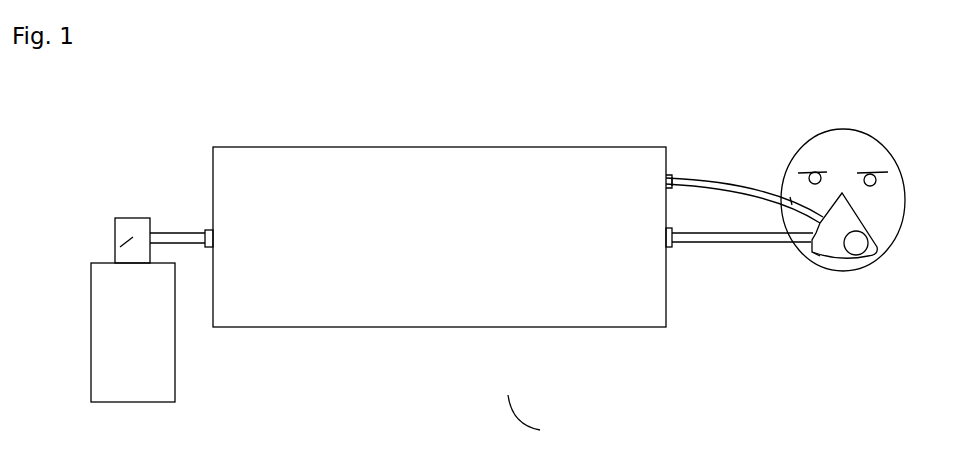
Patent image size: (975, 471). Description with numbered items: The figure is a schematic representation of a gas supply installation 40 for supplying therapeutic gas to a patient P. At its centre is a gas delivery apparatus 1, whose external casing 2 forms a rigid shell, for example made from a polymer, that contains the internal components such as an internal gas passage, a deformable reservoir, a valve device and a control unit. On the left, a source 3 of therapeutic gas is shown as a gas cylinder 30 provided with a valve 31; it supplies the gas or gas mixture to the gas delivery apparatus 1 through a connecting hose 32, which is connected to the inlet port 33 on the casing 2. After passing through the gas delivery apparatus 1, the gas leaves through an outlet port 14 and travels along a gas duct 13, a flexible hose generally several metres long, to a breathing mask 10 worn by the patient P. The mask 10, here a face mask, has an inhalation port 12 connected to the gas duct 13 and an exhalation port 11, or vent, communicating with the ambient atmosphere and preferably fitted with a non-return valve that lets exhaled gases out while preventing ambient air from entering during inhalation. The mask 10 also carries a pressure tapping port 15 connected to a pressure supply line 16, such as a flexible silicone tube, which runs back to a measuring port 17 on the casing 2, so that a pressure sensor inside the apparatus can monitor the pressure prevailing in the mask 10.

The gas delivery apparatus 1 is at (439, 234).
The external casing 2 is at (248, 328).
The source of therapeutic gas 3 is at (118, 283).
The gas cylinder 30 is at (122, 302).
The valve 31 is at (117, 246).
The connecting hose 32 is at (173, 230).
The inlet port 33 is at (207, 230).
The breathing mask 10 is at (862, 243).
The exhalation port 11 is at (866, 252).
The inhalation port 12 is at (816, 257).
The gas duct 13 is at (739, 222).
The outlet port 14 is at (673, 230).
The pressure tapping port 15 is at (777, 197).
The pressure supply line 16 is at (744, 179).
The measuring port 17 is at (676, 176).
The gas supply installation 40 is at (534, 420).
The patient P is at (853, 199).